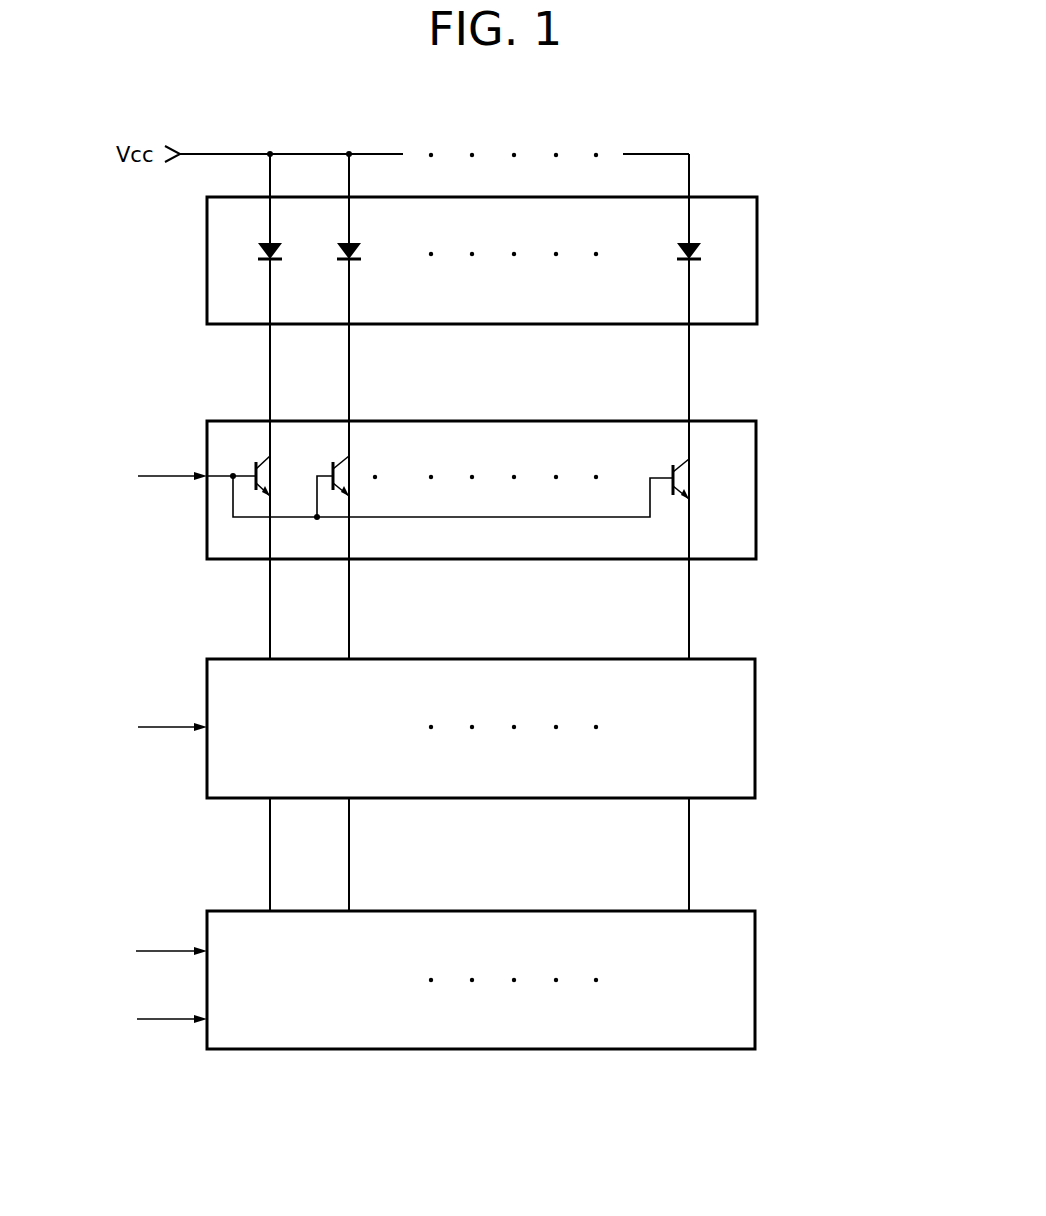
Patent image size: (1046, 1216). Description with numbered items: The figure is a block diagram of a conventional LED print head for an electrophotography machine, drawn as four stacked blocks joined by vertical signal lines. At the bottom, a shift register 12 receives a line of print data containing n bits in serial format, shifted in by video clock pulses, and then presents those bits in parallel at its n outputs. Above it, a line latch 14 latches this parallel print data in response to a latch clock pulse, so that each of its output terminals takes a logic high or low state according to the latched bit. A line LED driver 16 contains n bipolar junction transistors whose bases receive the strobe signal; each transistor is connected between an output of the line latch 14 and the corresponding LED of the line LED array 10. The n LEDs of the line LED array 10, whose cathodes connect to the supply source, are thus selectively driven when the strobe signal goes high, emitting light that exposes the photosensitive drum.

The line LED array 10 is at (725, 198).
The line LED driver 16 is at (726, 422).
The line latch 14 is at (726, 660).
The shift register 12 is at (725, 911).